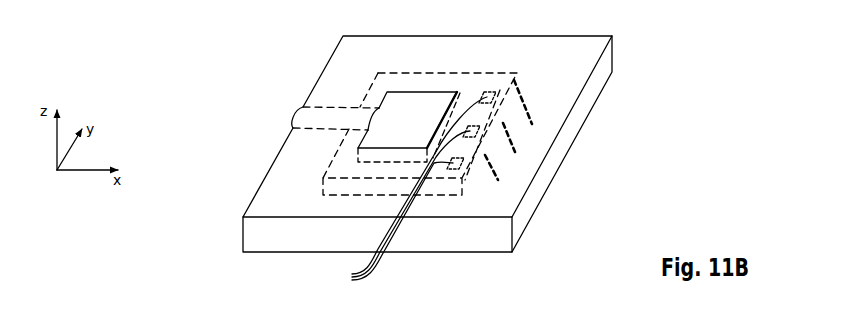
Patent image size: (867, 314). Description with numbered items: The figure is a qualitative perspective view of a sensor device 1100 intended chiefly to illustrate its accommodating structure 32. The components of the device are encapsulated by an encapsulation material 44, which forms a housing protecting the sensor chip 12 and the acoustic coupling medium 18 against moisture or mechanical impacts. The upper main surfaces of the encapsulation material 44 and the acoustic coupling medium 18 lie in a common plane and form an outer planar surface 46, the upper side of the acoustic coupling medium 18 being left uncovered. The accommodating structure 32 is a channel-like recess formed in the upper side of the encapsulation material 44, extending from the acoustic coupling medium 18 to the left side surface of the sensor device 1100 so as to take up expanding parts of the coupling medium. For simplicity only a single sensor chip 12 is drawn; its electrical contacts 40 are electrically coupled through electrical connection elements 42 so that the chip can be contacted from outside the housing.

The sensor device 1100 is at (318, 39).
The outer planar surface 46 is at (358, 47).
The encapsulation material 44 is at (285, 173).
The sensor chip 12 is at (473, 80).
The acoustic coupling medium 18 is at (407, 97).
The accommodating structure 32 is at (327, 117).
The electrical connection elements 42 is at (526, 108).
The electrical contacts 40 is at (410, 192).